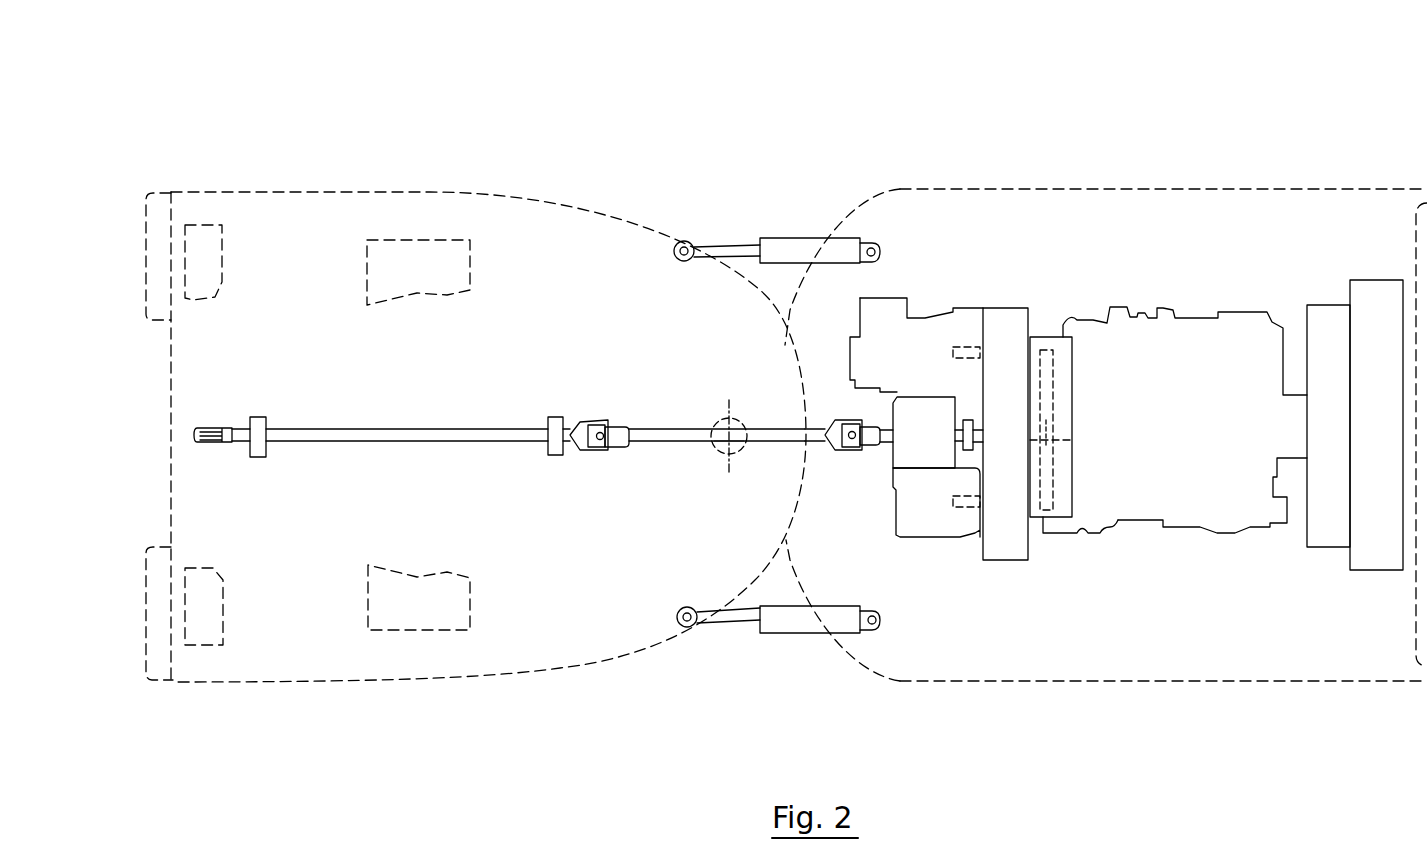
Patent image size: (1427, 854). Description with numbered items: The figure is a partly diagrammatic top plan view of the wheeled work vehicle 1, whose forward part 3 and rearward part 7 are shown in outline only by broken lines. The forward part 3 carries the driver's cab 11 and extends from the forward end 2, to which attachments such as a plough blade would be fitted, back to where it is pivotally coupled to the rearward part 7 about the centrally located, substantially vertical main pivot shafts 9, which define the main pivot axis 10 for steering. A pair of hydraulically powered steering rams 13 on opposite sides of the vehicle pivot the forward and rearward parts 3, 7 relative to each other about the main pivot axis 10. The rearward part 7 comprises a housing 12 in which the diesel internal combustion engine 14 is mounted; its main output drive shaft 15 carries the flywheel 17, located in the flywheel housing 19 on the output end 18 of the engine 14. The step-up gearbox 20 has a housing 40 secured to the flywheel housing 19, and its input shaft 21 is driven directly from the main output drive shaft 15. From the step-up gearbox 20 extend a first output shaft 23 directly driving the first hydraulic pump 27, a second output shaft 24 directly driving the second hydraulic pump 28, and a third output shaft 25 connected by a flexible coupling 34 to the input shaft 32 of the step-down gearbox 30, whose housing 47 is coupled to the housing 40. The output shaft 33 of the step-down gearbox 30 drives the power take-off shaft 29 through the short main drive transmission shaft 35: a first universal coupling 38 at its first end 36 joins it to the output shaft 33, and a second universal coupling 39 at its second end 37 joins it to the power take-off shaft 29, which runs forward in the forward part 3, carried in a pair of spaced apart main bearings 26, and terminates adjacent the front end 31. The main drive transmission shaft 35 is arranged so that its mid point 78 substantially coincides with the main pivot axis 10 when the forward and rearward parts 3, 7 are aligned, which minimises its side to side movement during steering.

The work vehicle 1 is at (557, 86).
The forward end 2 is at (170, 458).
The forward part 3 is at (428, 195).
The rearward part 7 is at (1330, 190).
The main pivot shafts 9 is at (717, 447).
The main pivot axis 10 is at (738, 455).
The driver's cab 11 is at (285, 218).
The housing 12 is at (1295, 685).
The steering rams 13 is at (798, 240).
The internal combustion engine 14 is at (1182, 517).
The main output drive shaft 15 is at (1046, 437).
The flywheel 17 is at (1043, 380).
The output end 18 is at (1045, 537).
The flywheel housing 19 is at (1050, 337).
The step-up gearbox 20 is at (1003, 308).
The input shaft 21 is at (1048, 412).
The first output shaft 23 is at (967, 347).
The second output shaft 24 is at (972, 507).
The third output shaft 25 is at (977, 443).
The main bearings 26 is at (258, 448).
The first hydraulic pump 27 is at (892, 316).
The second hydraulic pump 28 is at (922, 455).
The power take-off shaft 29 is at (222, 432).
The step-down gearbox 30 is at (905, 453).
The front end 31 is at (170, 380).
The input shaft 32 is at (957, 433).
The output shaft 33 is at (890, 445).
The flexible coupling 34 is at (968, 426).
The main drive transmission shaft 35 is at (668, 430).
The first end 36 is at (800, 455).
The second end 37 is at (628, 448).
The first universal coupling 38 is at (850, 420).
The second universal coupling 39 is at (600, 452).
The housing 40 is at (1010, 552).
The housing 47 is at (903, 517).
The mid point 78 is at (727, 437).